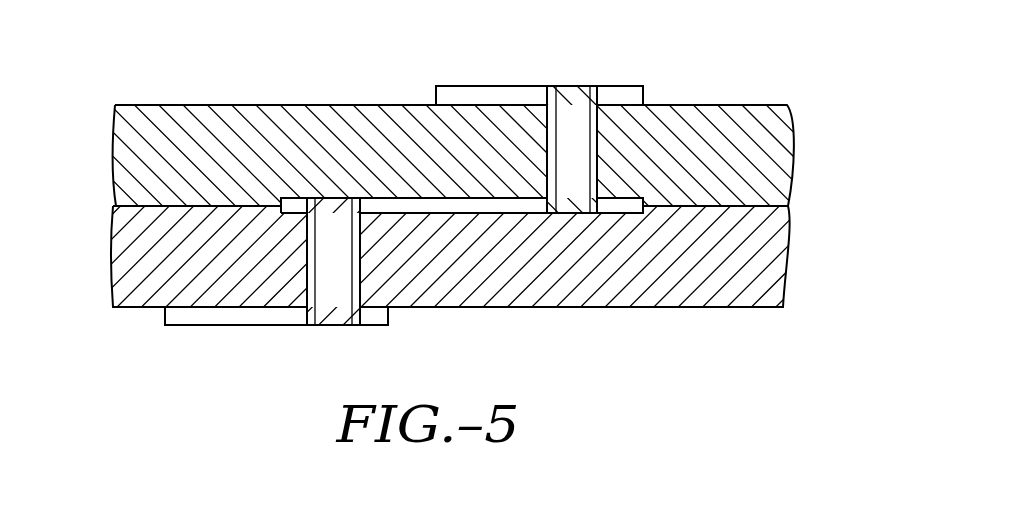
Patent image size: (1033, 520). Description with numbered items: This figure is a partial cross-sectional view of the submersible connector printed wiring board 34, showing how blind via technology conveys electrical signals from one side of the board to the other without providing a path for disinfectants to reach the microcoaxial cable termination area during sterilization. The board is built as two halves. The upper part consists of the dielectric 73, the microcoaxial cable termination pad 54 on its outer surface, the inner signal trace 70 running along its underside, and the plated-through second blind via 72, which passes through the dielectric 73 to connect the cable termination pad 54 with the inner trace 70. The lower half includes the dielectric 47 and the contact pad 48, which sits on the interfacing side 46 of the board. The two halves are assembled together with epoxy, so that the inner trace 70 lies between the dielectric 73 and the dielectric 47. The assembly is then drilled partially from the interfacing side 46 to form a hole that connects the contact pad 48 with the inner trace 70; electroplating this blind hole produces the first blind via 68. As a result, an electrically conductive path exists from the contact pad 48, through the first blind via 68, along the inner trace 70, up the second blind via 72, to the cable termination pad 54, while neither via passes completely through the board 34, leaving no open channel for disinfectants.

The printed wiring board 34 is at (446, 190).
The dielectric 73 is at (170, 108).
The dielectric 47 is at (112, 274).
The interfacing side 46 is at (675, 308).
The cable termination pad 54 is at (481, 86).
The second blind via 72 is at (575, 146).
The inner signal trace 70 is at (512, 214).
The first blind via 68 is at (333, 255).
The contact pad 48 is at (233, 325).